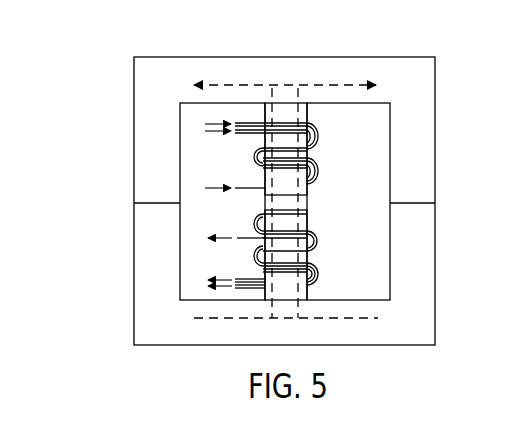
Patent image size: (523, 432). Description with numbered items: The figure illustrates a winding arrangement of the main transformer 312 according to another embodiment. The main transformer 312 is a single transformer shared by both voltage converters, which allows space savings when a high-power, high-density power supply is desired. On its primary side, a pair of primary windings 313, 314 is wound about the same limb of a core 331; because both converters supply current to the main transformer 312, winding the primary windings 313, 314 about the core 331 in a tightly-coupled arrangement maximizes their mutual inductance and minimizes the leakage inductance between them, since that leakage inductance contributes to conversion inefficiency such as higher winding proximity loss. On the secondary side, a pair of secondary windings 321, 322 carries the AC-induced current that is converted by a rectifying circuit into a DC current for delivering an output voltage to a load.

The main transformer 312 is at (99, 148).
The core 331 is at (143, 57).
The primary winding 313 is at (311, 126).
The primary winding 314 is at (313, 140).
The secondary winding 321 is at (313, 184).
The secondary winding 322 is at (313, 282).